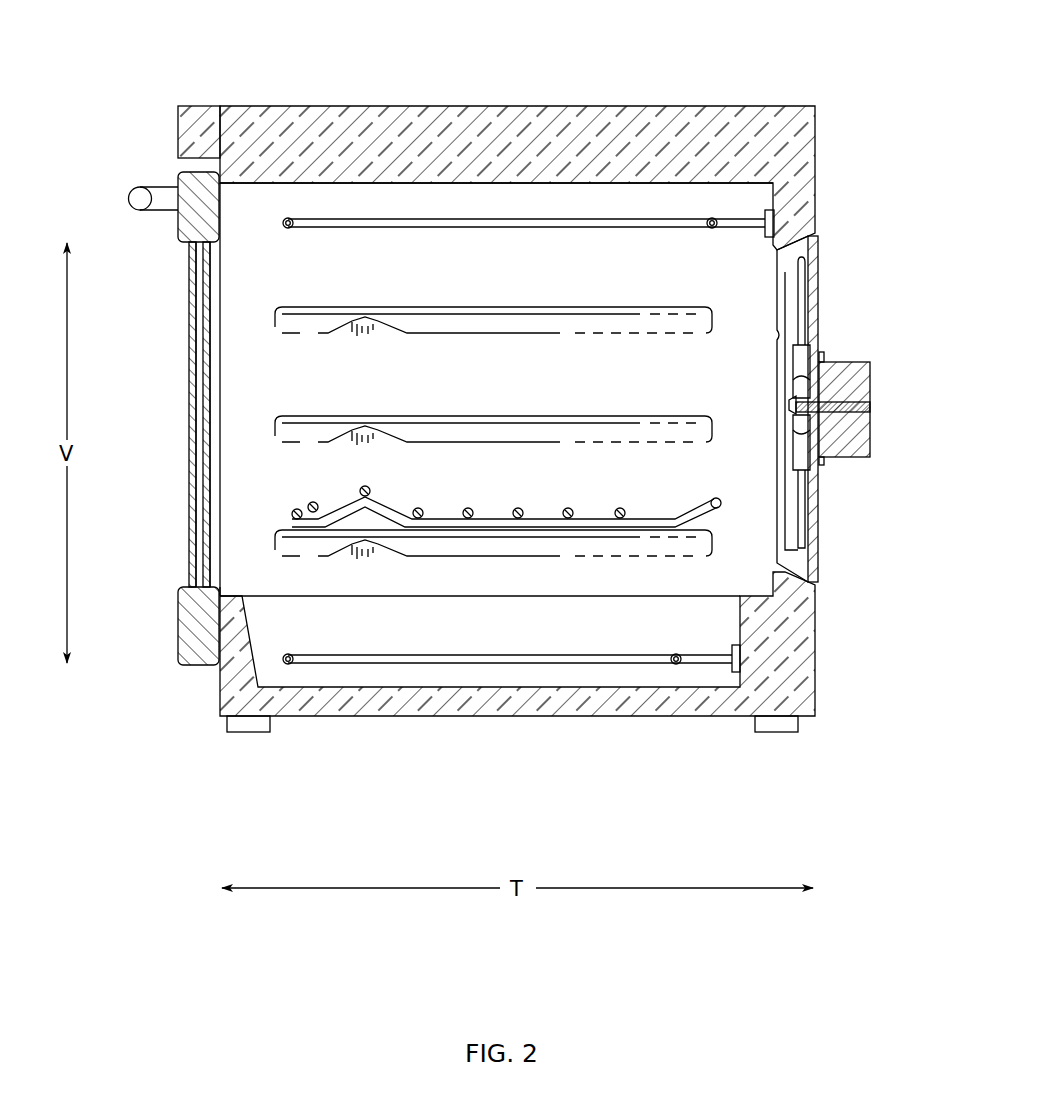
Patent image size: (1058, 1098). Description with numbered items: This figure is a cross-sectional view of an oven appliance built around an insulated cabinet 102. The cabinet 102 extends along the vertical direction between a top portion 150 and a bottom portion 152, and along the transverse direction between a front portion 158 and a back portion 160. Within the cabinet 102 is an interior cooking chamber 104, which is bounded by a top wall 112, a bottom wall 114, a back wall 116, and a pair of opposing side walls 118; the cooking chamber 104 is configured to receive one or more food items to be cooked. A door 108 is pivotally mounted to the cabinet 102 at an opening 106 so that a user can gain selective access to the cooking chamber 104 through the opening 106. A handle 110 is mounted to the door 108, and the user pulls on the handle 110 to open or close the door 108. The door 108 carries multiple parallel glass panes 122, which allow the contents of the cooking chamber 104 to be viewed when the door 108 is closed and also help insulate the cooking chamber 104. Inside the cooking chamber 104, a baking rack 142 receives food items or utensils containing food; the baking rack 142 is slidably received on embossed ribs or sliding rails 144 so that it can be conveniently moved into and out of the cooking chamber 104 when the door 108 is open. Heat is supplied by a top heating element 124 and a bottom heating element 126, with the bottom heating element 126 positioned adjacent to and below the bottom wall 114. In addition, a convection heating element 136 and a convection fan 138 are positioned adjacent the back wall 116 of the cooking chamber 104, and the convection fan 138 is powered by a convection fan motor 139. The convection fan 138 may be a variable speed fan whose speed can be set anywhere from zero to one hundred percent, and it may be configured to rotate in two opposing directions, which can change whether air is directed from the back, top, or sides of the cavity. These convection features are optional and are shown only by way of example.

The insulated cabinet 102 is at (432, 134).
The interior cooking chamber 104 is at (746, 296).
The opening 106 is at (215, 410).
The door 108 is at (192, 221).
The handle 110 is at (136, 187).
The top wall 112 is at (520, 184).
The bottom wall 114 is at (750, 594).
The back wall 116 is at (771, 197).
The side walls 118 is at (505, 282).
The glass panes 122 is at (205, 286).
The top heating element 124 is at (598, 224).
The bottom heating element 126 is at (455, 657).
The convection heating element 136 is at (801, 509).
The convection fan 138 is at (800, 366).
The convection fan motor 139 is at (874, 435).
The baking rack 142 is at (702, 511).
The sliding rails 144 is at (606, 432).
The top portion 150 is at (258, 90).
The bottom portion 152 is at (725, 748).
The front portion 158 is at (178, 682).
The back portion 160 is at (840, 153).